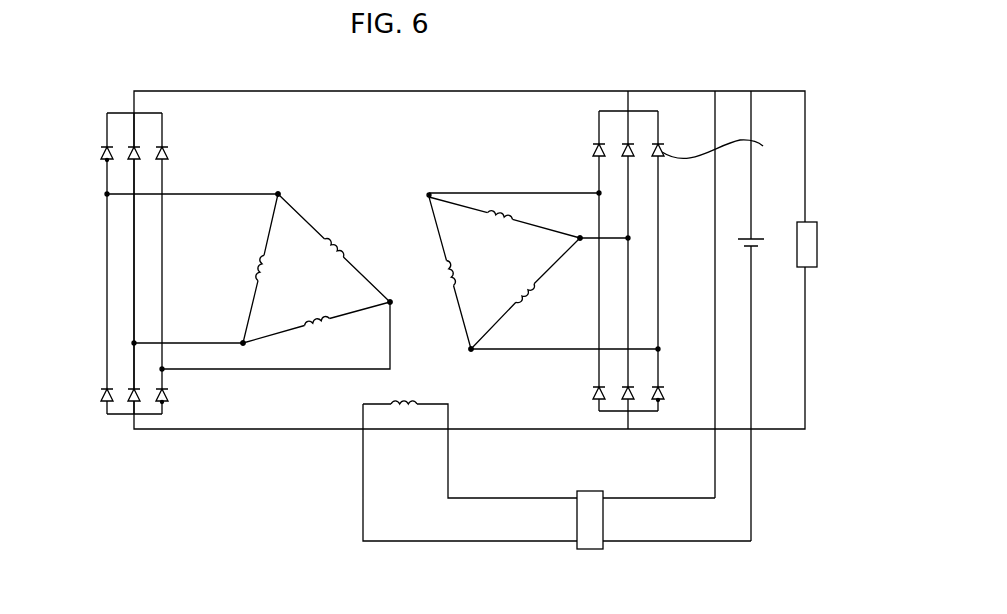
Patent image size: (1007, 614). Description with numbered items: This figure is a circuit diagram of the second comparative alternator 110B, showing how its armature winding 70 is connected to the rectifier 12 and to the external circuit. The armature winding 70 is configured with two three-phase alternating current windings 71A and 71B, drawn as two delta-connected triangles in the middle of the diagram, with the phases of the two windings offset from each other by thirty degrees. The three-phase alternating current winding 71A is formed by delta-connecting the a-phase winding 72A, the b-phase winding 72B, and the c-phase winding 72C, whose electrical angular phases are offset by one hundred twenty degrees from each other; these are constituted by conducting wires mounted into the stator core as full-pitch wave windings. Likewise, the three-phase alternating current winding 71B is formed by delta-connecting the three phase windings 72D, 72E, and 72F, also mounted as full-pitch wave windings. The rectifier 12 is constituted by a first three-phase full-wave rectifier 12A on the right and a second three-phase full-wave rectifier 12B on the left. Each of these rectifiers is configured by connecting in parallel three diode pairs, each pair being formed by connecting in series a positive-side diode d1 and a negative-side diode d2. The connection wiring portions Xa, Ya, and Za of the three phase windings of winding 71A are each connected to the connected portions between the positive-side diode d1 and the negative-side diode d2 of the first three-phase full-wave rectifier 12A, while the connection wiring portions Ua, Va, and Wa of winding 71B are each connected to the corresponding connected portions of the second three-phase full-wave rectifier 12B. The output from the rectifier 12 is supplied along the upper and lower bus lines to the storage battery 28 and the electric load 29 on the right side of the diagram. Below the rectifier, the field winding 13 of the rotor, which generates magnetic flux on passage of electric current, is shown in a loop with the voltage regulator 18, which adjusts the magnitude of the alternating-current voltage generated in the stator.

The second comparative alternator 110B is at (236, 226).
The rectifier 12 is at (596, 230).
The first three-phase full-wave rectifier 12A is at (672, 138).
The second three-phase full-wave rectifier 12B is at (172, 138).
The armature winding 70 is at (383, 225).
The three-phase alternating current winding 71A is at (476, 244).
The three-phase alternating current winding 71B is at (295, 241).
The a-phase winding 72A is at (457, 268).
The b-phase winding 72B is at (534, 290).
The c-phase winding 72C is at (507, 210).
The phase winding 72D is at (257, 276).
The phase winding 72E is at (322, 312).
The phase winding 72F is at (343, 257).
The field winding 13 is at (402, 411).
The voltage regulator 18 is at (592, 508).
The storage battery 28 is at (757, 248).
The electric load 29 is at (798, 221).
The connection wiring portion Ua is at (278, 194).
The connection wiring portion Va is at (391, 303).
The connection wiring portion Wa is at (243, 343).
The connection wiring portion Xa is at (429, 194).
The connection wiring portion Ya is at (590, 239).
The connection wiring portion Za is at (471, 350).
The positive-side diode d1 is at (105, 158).
The negative-side diode d2 is at (167, 403).